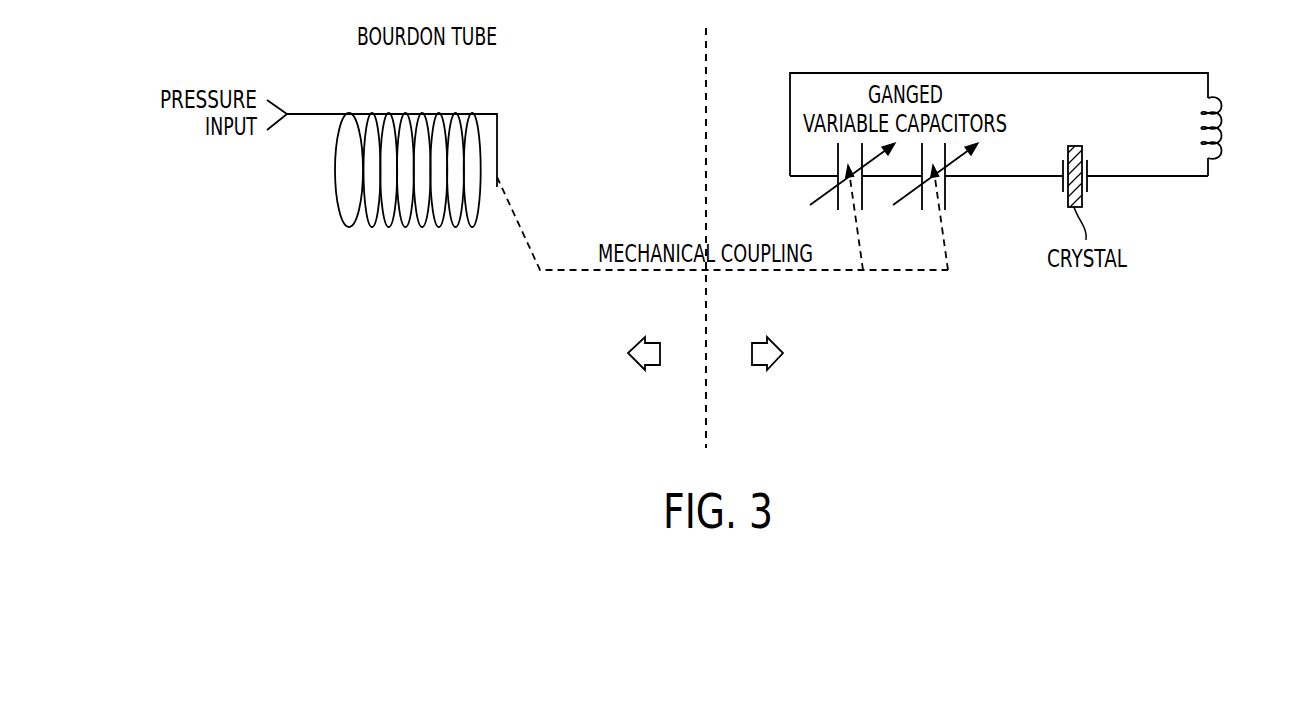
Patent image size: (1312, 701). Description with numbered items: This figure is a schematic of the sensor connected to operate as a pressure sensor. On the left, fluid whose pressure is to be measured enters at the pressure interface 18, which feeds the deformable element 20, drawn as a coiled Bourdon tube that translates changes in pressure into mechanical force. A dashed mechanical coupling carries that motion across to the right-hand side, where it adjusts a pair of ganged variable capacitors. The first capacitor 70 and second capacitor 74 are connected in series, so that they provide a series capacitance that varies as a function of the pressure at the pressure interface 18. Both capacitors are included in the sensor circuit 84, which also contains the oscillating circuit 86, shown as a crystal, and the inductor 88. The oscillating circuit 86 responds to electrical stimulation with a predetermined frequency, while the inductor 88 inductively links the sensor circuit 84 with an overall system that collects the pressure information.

The pressure interface 18 is at (288, 113).
The deformable element 20 is at (413, 115).
The first capacitor 70 is at (945, 180).
The second capacitor 74 is at (837, 165).
The sensor circuit 84 is at (1122, 73).
The oscillating circuit 86 is at (1088, 182).
The inductor 88 is at (1217, 107).